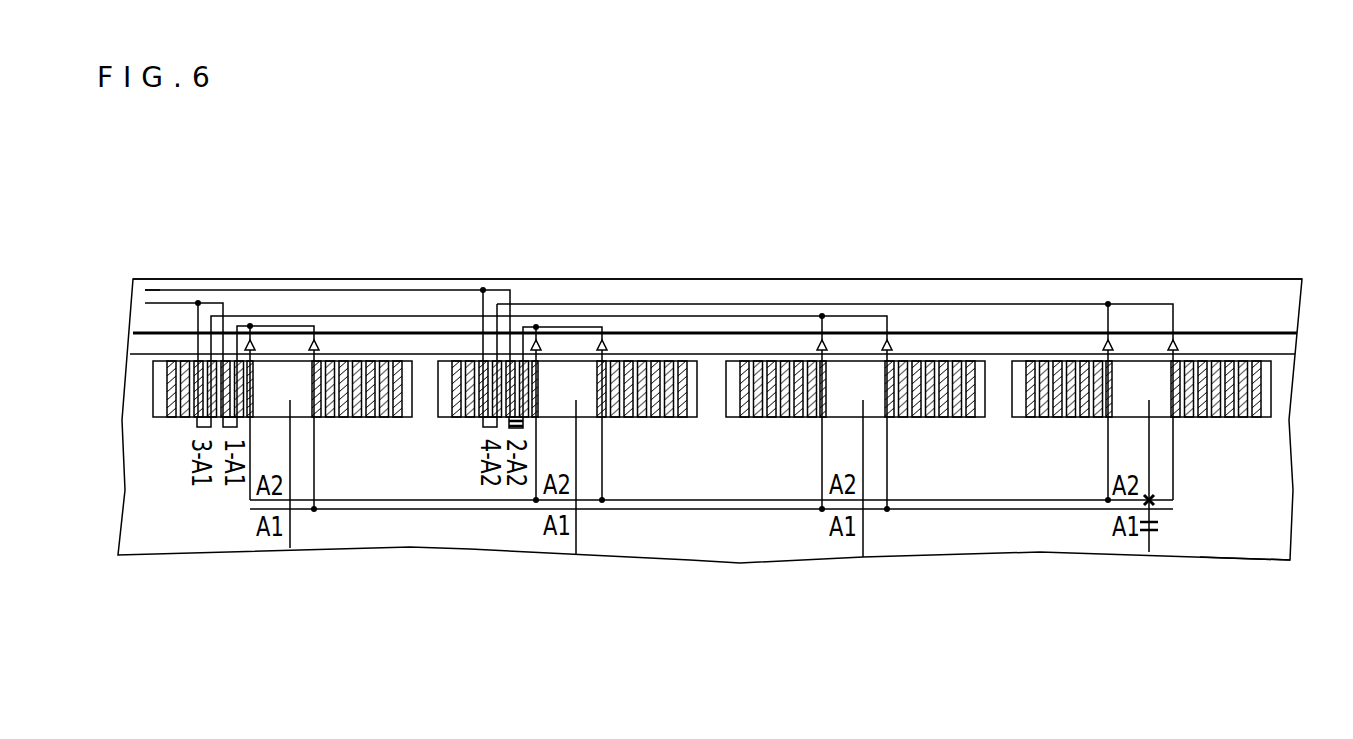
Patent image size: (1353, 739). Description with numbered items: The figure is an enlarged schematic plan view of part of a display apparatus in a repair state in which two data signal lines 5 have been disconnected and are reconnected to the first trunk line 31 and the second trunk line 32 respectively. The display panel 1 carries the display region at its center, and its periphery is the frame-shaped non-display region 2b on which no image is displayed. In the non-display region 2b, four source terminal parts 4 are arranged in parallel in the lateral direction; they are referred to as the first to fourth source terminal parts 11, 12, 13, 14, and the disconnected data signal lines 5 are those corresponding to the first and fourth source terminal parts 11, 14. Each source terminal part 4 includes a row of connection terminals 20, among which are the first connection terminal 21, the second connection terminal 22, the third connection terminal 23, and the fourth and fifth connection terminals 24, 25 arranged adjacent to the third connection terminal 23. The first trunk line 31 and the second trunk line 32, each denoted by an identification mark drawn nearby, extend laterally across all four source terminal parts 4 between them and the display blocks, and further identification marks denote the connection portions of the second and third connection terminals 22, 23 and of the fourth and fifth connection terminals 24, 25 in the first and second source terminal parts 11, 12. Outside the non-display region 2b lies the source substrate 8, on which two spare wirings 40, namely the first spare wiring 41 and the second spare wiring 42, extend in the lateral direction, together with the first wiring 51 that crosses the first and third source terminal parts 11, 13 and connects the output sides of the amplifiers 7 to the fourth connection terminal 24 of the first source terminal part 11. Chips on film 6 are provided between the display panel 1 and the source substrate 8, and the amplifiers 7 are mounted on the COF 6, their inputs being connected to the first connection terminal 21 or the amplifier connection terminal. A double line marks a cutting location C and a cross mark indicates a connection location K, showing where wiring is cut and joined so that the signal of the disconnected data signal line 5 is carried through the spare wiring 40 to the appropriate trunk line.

The display panel 1 is at (1288, 488).
The non-display region 2b is at (1249, 524).
The source terminal part 4 is at (1280, 432).
The data signal line 5 is at (290, 537).
The chip on film 6 is at (1282, 346).
The amplifier 7 is at (250, 338).
The source substrate 8 is at (1290, 306).
The first source terminal part 11 is at (283, 372).
The second source terminal part 12 is at (570, 372).
The third source terminal part 13 is at (853, 370).
The fourth source terminal part 14 is at (1140, 370).
The connection terminal 20 is at (355, 431).
The first connection terminal 21 is at (257, 370).
The second connection terminal 22 is at (236, 324).
The third connection terminal 23 is at (217, 420).
The fourth connection terminal 24 is at (220, 370).
The fifth connection terminal 25 is at (192, 370).
The first trunk line 31 is at (615, 511).
The second trunk line 32 is at (650, 502).
The spare wiring 40 is at (431, 282).
The first spare wiring 41 is at (173, 302).
The second spare wiring 42 is at (152, 288).
The first wiring 51 is at (386, 315).
The connection location K is at (1160, 503).
The cutting location C is at (1169, 531).